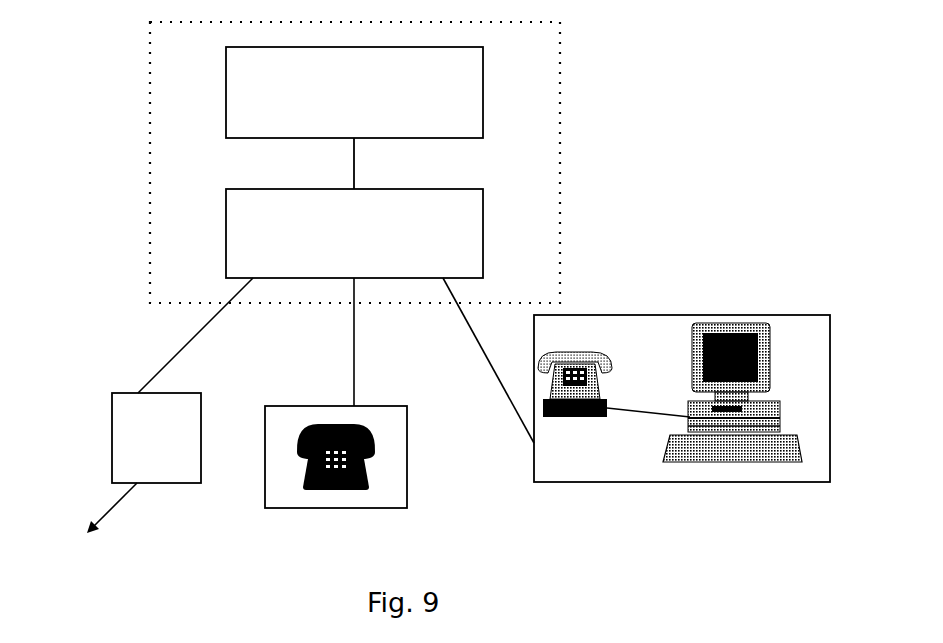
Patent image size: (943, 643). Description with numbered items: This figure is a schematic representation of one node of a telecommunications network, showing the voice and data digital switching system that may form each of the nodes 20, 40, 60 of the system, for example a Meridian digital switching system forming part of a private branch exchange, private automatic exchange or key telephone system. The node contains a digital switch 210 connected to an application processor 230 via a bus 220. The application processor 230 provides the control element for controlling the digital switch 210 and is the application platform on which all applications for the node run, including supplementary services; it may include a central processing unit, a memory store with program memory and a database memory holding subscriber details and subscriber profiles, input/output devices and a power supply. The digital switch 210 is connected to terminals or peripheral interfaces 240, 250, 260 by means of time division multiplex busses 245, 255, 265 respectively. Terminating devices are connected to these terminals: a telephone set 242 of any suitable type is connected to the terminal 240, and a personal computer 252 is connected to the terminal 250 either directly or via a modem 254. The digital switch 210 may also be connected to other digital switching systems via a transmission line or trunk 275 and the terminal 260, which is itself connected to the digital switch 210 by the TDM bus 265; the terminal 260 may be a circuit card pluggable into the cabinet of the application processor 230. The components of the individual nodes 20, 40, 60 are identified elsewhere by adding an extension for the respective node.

The node 20 is at (418, 162).
The node 40 is at (418, 162).
The node 60 is at (418, 162).
The digital switch 210 is at (470, 250).
The bus 220 is at (354, 163).
The application processor 230 is at (457, 100).
The terminal 240 is at (407, 470).
The telephone set 242 is at (307, 482).
The time division multiplex bus 245 is at (319, 342).
The terminal 250 is at (703, 482).
The personal computer 252 is at (767, 455).
The modem 254 is at (586, 417).
The time division multiplex bus 255 is at (474, 360).
The terminal 260 is at (137, 444).
The time division multiplex bus 265 is at (186, 335).
The trunk 275 is at (129, 509).